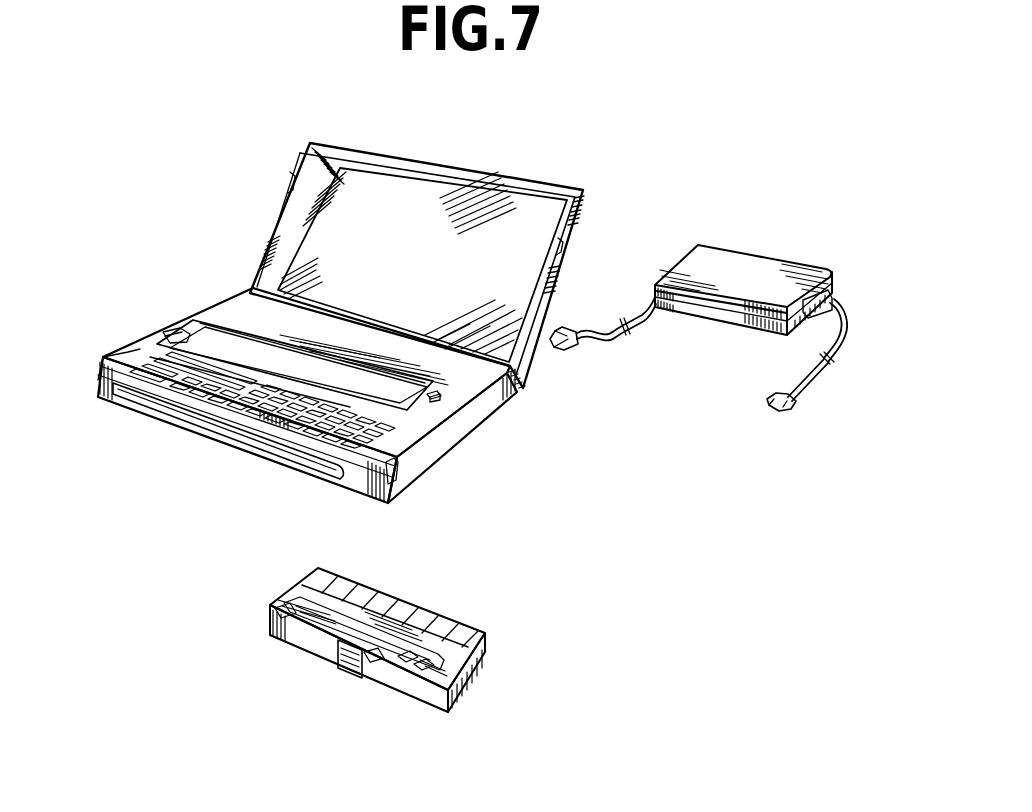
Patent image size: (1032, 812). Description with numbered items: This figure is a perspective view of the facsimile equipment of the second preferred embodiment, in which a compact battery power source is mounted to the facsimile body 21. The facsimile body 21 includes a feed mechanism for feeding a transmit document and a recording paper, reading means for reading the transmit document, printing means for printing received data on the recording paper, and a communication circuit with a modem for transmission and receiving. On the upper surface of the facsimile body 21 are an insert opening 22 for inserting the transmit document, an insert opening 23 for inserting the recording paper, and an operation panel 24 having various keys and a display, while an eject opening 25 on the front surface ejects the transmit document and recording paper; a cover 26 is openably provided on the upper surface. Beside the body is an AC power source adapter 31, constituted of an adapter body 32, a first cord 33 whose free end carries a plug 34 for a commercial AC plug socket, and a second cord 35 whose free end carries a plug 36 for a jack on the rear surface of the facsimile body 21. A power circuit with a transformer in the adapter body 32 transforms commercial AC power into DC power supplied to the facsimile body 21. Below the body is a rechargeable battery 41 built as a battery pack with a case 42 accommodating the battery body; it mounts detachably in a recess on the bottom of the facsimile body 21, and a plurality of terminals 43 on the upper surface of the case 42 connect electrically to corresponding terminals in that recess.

The facsimile body 21 is at (450, 453).
The insert opening 22 is at (228, 333).
The insert opening 23 is at (193, 342).
The operation panel 24 is at (127, 353).
The eject opening 25 is at (180, 413).
The cover 26 is at (463, 168).
The AC power source adapter 31 is at (743, 242).
The adapter body 32 is at (790, 268).
The first cord 33 is at (845, 322).
The plug 34 is at (786, 406).
The second cord 35 is at (624, 332).
The plug 36 is at (574, 344).
The rechargeable battery 41 is at (404, 656).
The case 42 is at (327, 655).
The terminals 43 is at (424, 668).